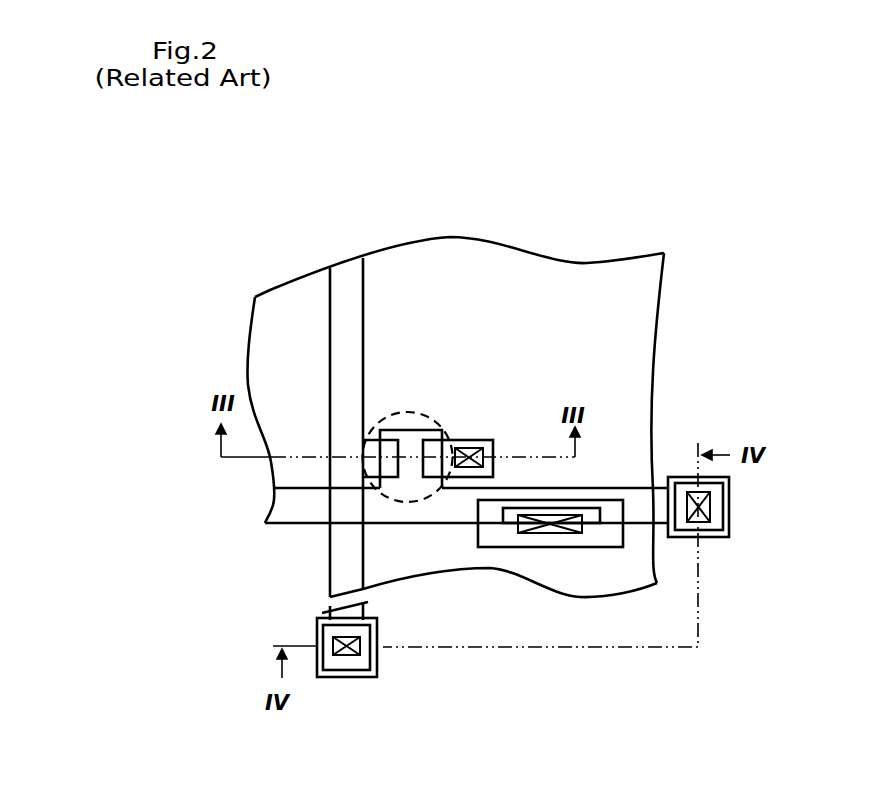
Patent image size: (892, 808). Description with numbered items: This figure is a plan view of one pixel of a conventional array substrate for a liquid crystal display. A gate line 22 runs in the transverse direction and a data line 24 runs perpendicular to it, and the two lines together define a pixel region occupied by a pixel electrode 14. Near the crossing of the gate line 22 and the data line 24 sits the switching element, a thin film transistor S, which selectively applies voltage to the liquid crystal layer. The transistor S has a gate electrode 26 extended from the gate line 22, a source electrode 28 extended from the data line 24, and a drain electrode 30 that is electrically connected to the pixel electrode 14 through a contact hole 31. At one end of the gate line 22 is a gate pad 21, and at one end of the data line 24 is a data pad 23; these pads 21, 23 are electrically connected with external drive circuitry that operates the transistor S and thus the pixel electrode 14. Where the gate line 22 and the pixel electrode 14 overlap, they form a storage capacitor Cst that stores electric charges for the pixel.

The pixel electrode 14 is at (297, 295).
The gate pad 21 is at (710, 508).
The gate line 22 is at (633, 513).
The data pad 23 is at (368, 676).
The data line 24 is at (340, 552).
The gate electrode 26 is at (415, 447).
The source electrode 28 is at (392, 485).
The drain electrode 30 is at (438, 467).
The contact hole 31 is at (477, 447).
The thin film transistor S is at (380, 432).
The storage capacitor Cst is at (617, 498).